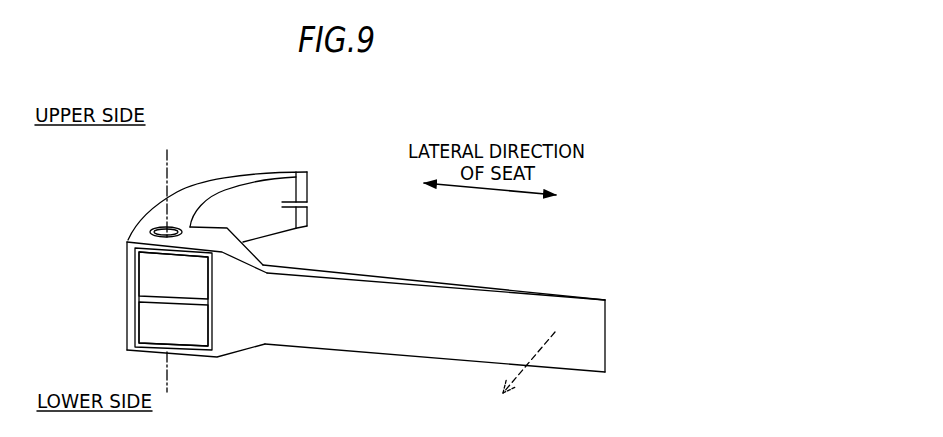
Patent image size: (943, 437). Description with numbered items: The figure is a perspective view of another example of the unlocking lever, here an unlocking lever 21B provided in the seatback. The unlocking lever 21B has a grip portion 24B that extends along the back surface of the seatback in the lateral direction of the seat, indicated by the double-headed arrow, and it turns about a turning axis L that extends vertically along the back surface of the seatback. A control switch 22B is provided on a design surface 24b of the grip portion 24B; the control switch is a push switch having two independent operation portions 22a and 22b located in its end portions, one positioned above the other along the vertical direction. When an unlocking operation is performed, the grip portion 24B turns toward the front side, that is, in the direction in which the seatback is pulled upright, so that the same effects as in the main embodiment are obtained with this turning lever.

The unlocking lever 21B is at (132, 189).
The control switch 22B is at (140, 296).
The operation portion 22b is at (195, 281).
The operation portion 22a is at (198, 320).
The grip portion 24B is at (418, 278).
The design surface 24b is at (339, 345).
The turning axis L is at (168, 162).